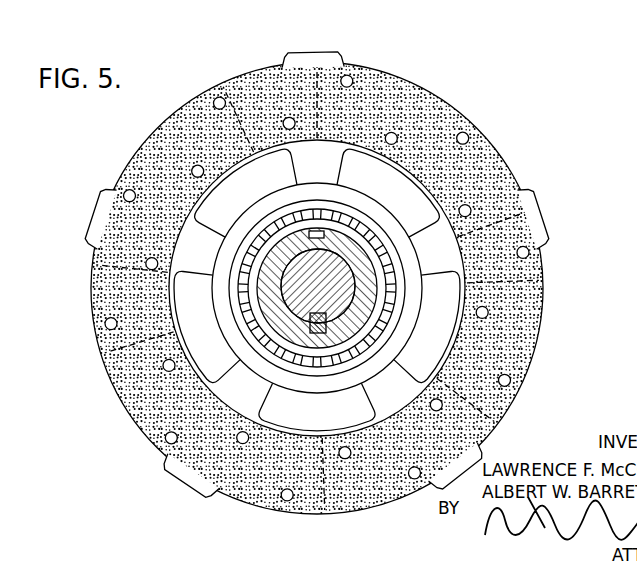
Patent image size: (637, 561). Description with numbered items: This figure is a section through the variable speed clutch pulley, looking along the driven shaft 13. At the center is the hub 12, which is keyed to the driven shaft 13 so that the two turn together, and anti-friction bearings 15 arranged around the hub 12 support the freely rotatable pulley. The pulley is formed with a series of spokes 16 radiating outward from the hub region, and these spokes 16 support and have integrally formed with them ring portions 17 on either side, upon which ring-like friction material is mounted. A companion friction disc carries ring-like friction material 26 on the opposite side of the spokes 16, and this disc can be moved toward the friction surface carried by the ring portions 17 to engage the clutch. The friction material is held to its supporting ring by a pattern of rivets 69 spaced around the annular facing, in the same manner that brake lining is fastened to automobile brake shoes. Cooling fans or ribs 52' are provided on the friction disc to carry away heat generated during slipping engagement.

The hub 12 is at (380, 314).
The driven shaft 13 is at (298, 287).
The anti-friction bearings 15 is at (312, 357).
The spokes 16 is at (93, 222).
The ring portions 17 is at (153, 140).
The friction material 26 is at (113, 384).
The cooling fans or ribs 52' is at (324, 278).
The rivets 69 is at (271, 62).